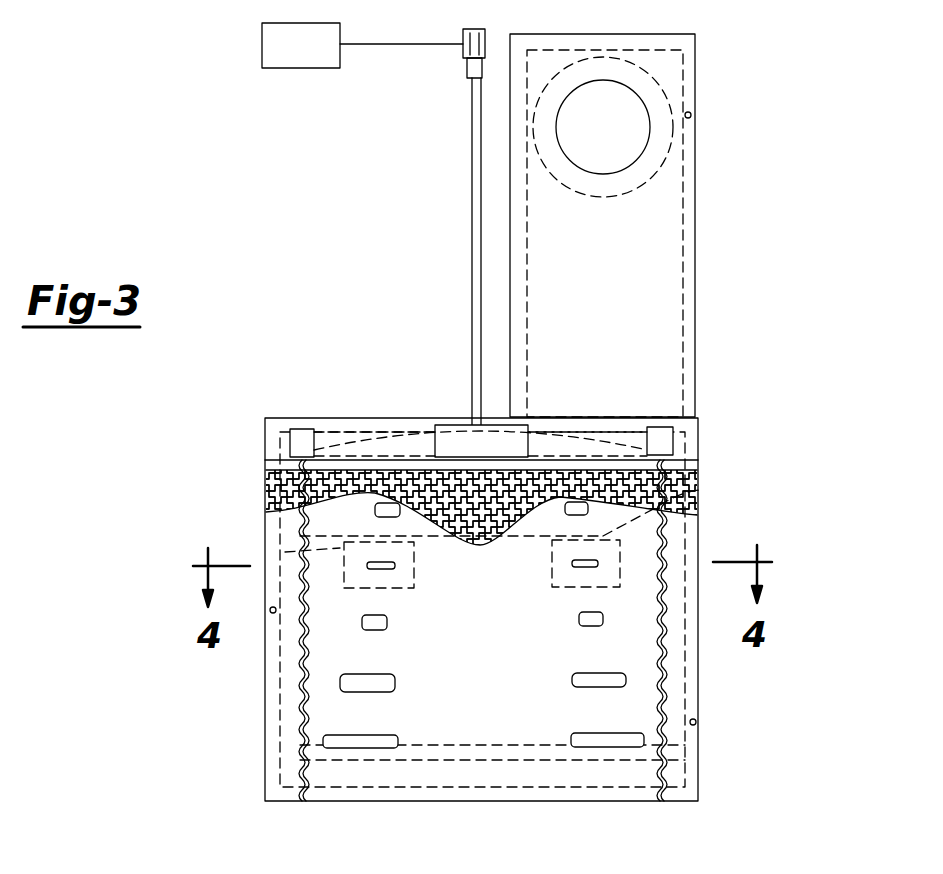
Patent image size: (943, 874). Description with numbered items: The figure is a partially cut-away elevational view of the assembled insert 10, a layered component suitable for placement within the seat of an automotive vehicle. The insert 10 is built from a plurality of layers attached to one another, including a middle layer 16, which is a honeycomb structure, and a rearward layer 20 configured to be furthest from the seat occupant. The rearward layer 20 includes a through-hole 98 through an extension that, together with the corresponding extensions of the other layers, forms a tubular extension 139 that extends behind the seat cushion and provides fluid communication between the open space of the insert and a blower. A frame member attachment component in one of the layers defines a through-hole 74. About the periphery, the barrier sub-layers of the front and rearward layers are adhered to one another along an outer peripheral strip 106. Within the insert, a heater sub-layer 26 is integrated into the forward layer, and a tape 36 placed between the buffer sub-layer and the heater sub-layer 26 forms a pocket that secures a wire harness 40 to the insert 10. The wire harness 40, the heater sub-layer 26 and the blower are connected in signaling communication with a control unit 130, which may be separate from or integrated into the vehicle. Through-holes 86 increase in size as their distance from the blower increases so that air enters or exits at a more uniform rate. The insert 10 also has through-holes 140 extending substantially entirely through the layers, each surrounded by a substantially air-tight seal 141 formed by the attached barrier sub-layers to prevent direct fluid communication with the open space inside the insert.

The insert 10 is at (272, 220).
The middle layer 16 is at (640, 418).
The rearward layer 20 is at (645, 225).
The heater sub-layer 26 is at (602, 482).
The tape 36 is at (363, 448).
The wire harness 40 is at (449, 445).
The through-hole 74 is at (603, 103).
The through-holes 86 is at (597, 732).
The through-hole 98 is at (603, 127).
The outer peripheral strip 106 is at (695, 362).
The control unit 130 is at (262, 45).
The extension 139 is at (627, 303).
The through-holes 140 is at (367, 565).
The seal 141 is at (300, 552).